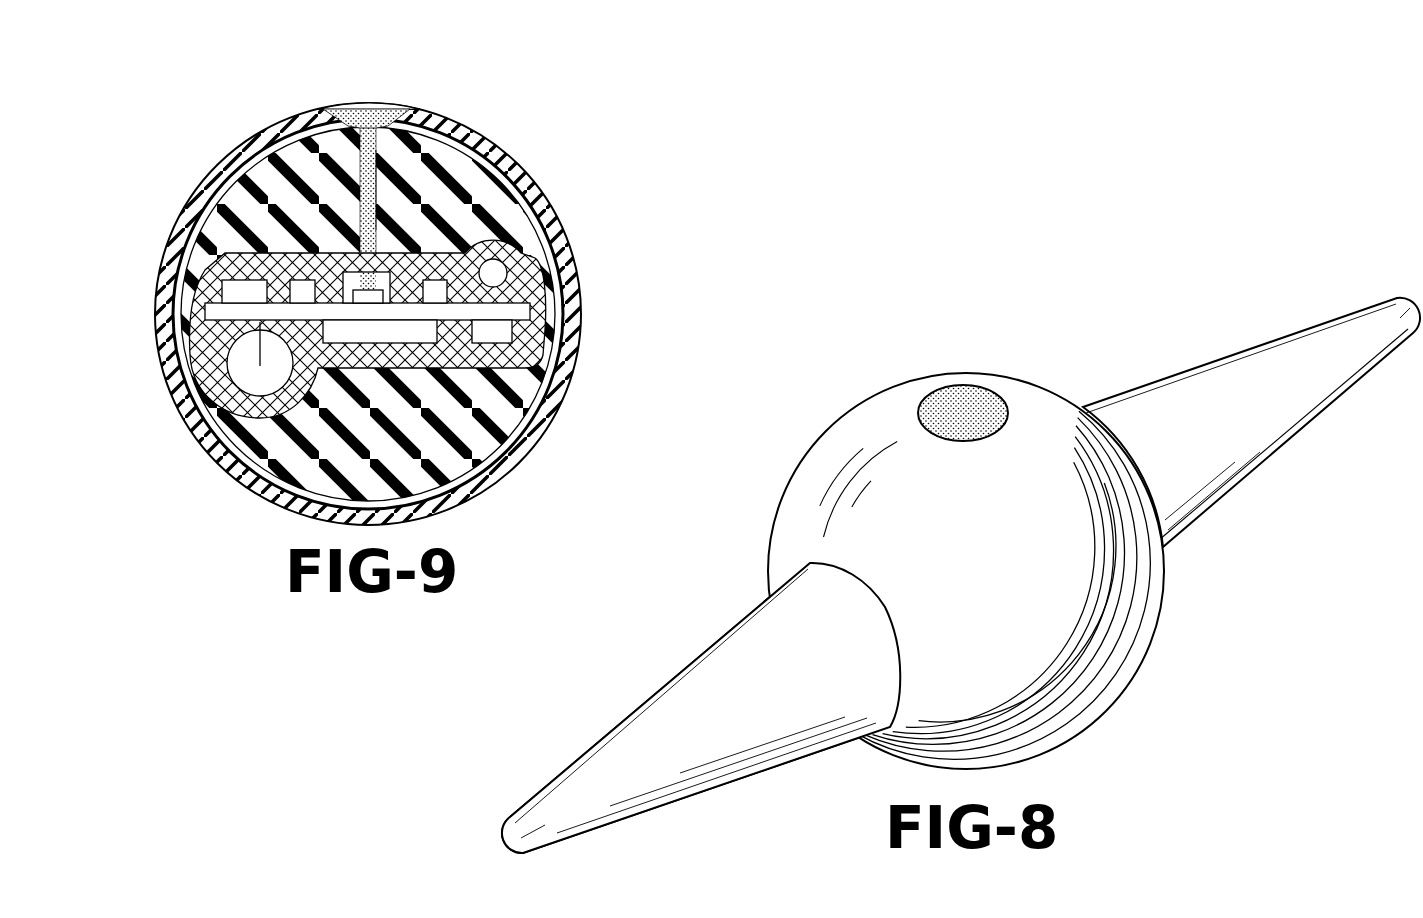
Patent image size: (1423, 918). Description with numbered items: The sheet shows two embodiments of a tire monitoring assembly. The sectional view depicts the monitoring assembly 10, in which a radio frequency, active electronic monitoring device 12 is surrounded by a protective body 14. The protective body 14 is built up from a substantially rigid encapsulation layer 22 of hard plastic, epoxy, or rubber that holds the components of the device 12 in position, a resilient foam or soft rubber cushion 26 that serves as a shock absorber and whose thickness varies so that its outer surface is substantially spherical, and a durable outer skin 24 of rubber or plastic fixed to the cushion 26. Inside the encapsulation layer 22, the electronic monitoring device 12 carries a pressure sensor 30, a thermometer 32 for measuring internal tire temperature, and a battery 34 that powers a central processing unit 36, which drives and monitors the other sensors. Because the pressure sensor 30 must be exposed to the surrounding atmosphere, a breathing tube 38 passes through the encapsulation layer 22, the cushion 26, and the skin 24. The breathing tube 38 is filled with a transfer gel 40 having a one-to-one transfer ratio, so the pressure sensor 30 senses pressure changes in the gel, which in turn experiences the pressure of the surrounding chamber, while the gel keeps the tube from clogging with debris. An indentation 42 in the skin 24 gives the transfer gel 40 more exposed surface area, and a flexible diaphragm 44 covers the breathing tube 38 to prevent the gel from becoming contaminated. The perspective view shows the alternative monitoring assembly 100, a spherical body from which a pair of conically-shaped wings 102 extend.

In FIG. 9, the monitoring assembly 10 is at (205, 120).
In FIG. 9, the electronic monitoring device 12 is at (516, 319).
In FIG. 9, the protective body 14 is at (176, 209).
In FIG. 9, the encapsulation layer 22 is at (497, 360).
In FIG. 9, the outer skin 24 is at (517, 450).
In FIG. 9, the cushion 26 is at (447, 457).
In FIG. 9, the pressure sensor 30 is at (367, 290).
In FIG. 9, the thermometer 32 is at (437, 290).
In FIG. 9, the battery 34 is at (240, 372).
In FIG. 9, the central processing unit 36 is at (237, 290).
In FIG. 9, the breathing tube 38 is at (370, 187).
In FIG. 9, the transfer gel 40 is at (370, 143).
In FIG. 8, the transfer gel 40 is at (953, 398).
In FIG. 9, the indentation 42 is at (399, 108).
In FIG. 9, the flexible diaphragm 44 is at (355, 108).
In FIG. 8, the monitoring assembly 100 is at (1133, 738).
In FIG. 8, the wings 102 is at (1193, 385).